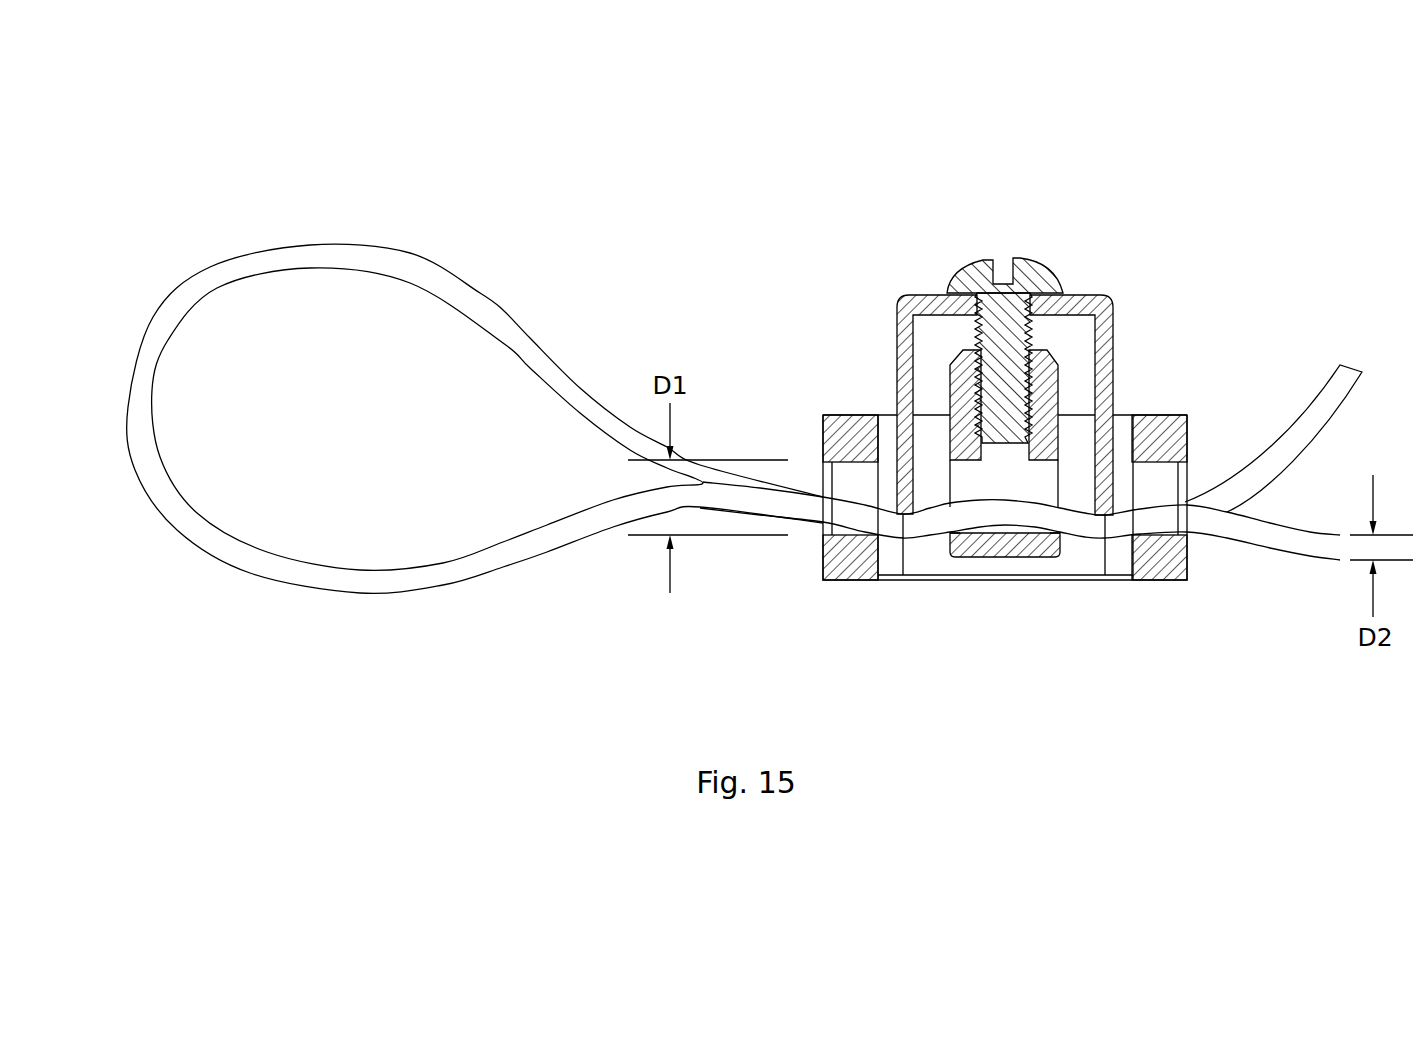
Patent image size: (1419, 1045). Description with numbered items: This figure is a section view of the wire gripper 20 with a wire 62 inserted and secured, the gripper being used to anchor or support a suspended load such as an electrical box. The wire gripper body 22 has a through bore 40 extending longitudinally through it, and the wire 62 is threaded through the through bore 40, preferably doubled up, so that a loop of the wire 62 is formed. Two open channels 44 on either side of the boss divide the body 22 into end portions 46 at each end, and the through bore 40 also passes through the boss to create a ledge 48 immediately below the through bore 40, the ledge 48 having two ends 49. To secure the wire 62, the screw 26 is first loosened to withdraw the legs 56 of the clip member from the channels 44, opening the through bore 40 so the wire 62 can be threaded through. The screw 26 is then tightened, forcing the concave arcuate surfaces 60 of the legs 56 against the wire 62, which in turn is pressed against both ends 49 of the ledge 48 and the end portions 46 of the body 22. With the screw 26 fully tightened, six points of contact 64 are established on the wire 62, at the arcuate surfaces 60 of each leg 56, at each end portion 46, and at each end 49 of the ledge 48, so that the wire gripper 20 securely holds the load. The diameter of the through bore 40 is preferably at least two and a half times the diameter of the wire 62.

The wire gripper 20 is at (788, 269).
The wire gripper body 22 is at (1183, 580).
The screw 26 is at (1035, 260).
The through bore 40 is at (992, 491).
The open channels 44 is at (932, 468).
The end portions 46 is at (838, 580).
The ledge 48 is at (1008, 545).
The ends of ledge 49 is at (948, 535).
The legs 56 is at (897, 358).
The concave arcuate surface 60 is at (894, 460).
The wire 62 is at (388, 595).
The points of contact 64 is at (872, 580).